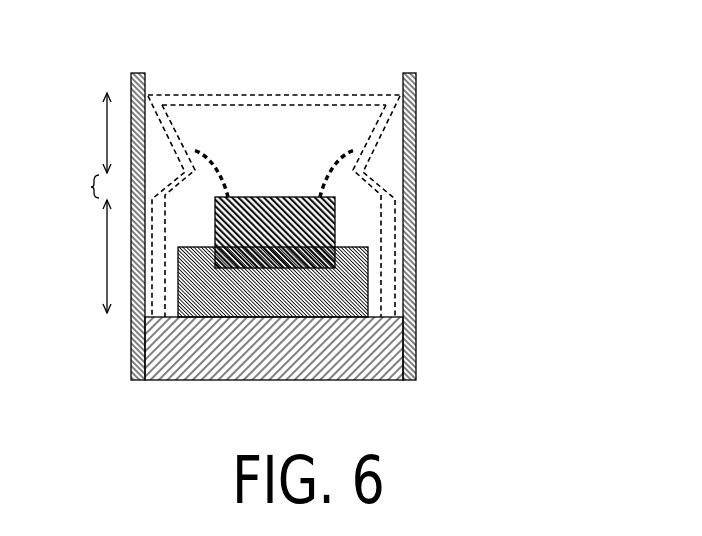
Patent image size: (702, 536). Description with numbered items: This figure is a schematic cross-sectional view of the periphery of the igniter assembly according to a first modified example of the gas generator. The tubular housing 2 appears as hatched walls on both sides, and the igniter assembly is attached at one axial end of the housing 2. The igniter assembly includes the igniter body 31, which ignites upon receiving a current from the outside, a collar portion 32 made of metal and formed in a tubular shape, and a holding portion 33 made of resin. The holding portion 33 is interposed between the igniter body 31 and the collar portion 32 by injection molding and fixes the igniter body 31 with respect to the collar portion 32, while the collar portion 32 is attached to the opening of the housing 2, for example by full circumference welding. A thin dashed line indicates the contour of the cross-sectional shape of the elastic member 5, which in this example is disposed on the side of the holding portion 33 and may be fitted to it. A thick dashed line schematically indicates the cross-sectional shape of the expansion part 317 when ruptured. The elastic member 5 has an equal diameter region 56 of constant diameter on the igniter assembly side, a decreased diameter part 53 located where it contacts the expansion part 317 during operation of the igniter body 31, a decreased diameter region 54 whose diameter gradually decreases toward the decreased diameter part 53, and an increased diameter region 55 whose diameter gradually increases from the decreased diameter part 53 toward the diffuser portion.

The housing 2 is at (403, 125).
The elastic member 5 is at (352, 92).
The igniter body 31 is at (335, 222).
The collar portion 32 is at (338, 350).
The holding portion 33 is at (335, 295).
The decreased diameter part 53 is at (185, 175).
The expansion part 317 is at (313, 183).
The decreased diameter region 54 is at (72, 188).
The increased diameter region 55 is at (78, 133).
The equal diameter region 56 is at (78, 256).